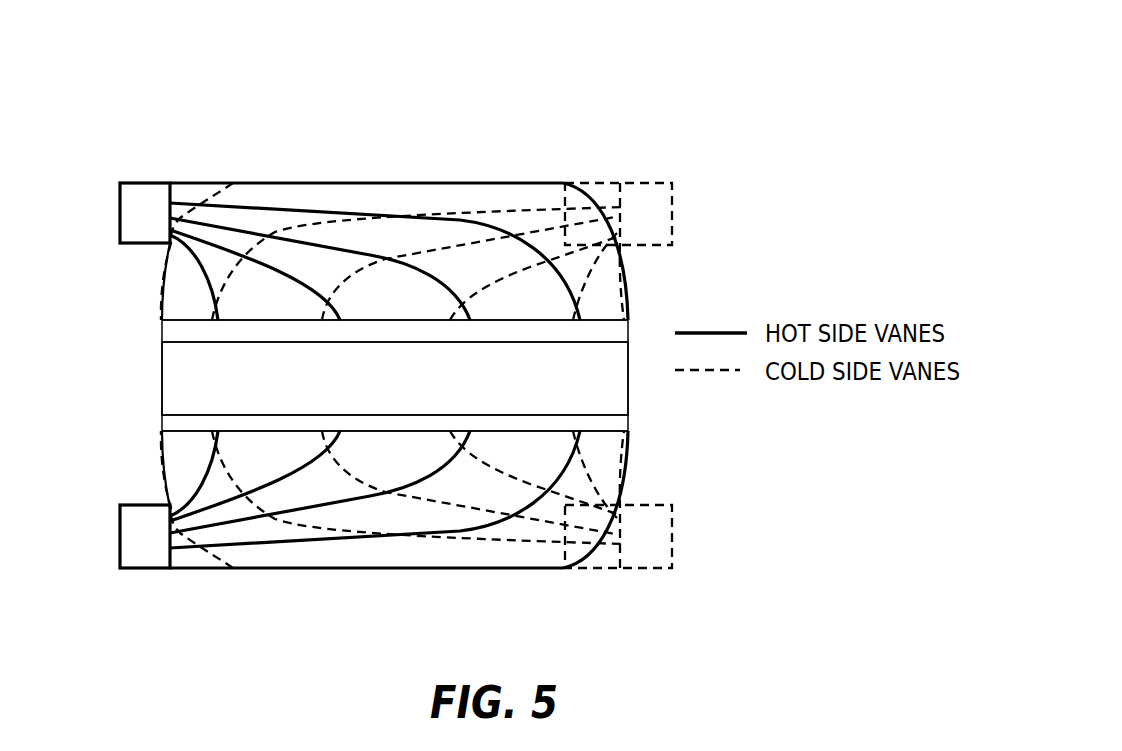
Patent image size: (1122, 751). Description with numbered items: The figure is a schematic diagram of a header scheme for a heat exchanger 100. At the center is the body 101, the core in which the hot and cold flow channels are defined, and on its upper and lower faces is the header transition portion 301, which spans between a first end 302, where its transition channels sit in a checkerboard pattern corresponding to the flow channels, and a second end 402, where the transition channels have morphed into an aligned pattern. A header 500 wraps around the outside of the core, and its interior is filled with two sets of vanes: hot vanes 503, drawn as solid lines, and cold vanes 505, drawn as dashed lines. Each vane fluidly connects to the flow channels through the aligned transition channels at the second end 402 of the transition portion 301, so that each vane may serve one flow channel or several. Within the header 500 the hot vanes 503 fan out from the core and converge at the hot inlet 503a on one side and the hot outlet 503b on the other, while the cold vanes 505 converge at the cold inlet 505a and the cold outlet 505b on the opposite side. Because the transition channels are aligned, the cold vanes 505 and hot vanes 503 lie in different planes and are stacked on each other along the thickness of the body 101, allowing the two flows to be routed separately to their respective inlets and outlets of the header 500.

The heat exchanger 100 is at (210, 120).
The body 101 is at (267, 391).
The header transition portion 301 is at (182, 332).
The first end 302 is at (522, 342).
The second end 402 is at (603, 320).
The header 500 is at (403, 202).
The hot vanes 503 is at (226, 226).
The hot inlet 503a is at (141, 572).
The hot outlet 503b is at (145, 200).
The cold vanes 505 is at (552, 228).
The cold inlet 505a is at (657, 553).
The cold outlet 505b is at (642, 183).